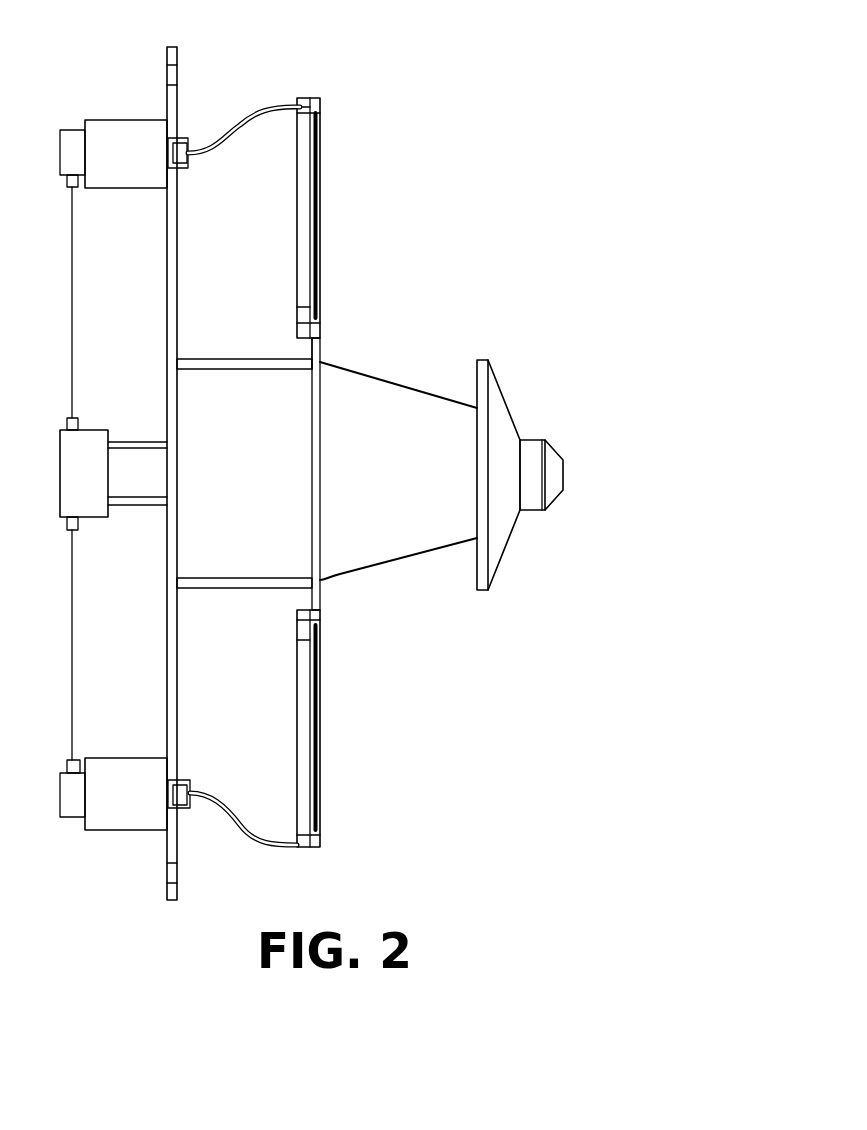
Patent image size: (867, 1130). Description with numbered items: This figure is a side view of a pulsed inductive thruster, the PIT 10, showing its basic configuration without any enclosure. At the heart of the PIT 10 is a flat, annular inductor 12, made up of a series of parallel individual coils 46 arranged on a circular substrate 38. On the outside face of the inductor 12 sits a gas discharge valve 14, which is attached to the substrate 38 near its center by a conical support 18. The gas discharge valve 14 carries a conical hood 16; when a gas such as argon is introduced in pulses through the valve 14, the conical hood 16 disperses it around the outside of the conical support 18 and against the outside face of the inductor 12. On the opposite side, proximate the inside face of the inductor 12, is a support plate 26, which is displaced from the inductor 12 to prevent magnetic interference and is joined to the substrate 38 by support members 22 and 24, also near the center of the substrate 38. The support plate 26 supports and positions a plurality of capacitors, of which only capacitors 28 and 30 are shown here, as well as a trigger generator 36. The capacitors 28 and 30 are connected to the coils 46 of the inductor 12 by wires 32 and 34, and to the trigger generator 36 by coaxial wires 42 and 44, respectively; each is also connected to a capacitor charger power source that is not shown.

The PIT 10 is at (424, 93).
The inductor 12 is at (356, 218).
The gas discharge valve 14 is at (574, 466).
The conical hood 16 is at (503, 400).
The conical support 18 is at (355, 375).
The support member 22 is at (204, 360).
The support member 24 is at (207, 578).
The support plate 26 is at (175, 277).
The capacitor 28 is at (88, 120).
The capacitor 30 is at (145, 757).
The wire 32 is at (243, 118).
The wire 34 is at (230, 800).
The trigger generator 36 is at (60, 468).
The circular substrate 38 is at (317, 357).
The coaxial wire 42 is at (72, 337).
The coaxial wire 44 is at (72, 665).
The individual coils 46 is at (320, 198).